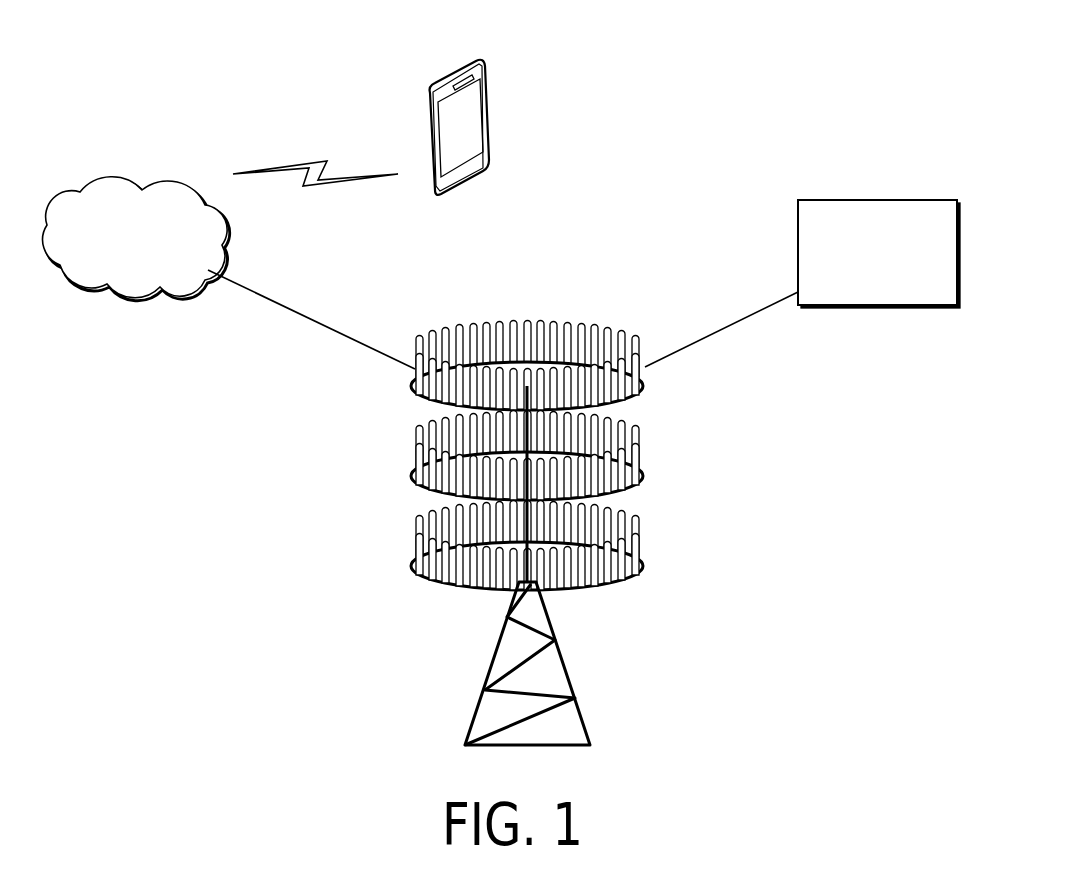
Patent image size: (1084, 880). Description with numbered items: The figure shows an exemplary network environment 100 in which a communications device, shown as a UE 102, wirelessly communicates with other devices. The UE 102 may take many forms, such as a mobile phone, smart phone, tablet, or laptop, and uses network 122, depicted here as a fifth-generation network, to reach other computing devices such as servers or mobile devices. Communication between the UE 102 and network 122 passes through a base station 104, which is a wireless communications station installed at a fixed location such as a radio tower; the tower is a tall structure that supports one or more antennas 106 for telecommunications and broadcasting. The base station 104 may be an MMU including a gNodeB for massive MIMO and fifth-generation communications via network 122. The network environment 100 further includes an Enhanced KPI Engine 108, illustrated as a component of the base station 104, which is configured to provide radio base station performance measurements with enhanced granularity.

The network environment 100 is at (130, 42).
The UE 102 is at (457, 63).
The base station 104 is at (568, 667).
The antennas 106 is at (549, 325).
The Enhanced KPI Engine 108 is at (854, 200).
The network 122 is at (114, 177).